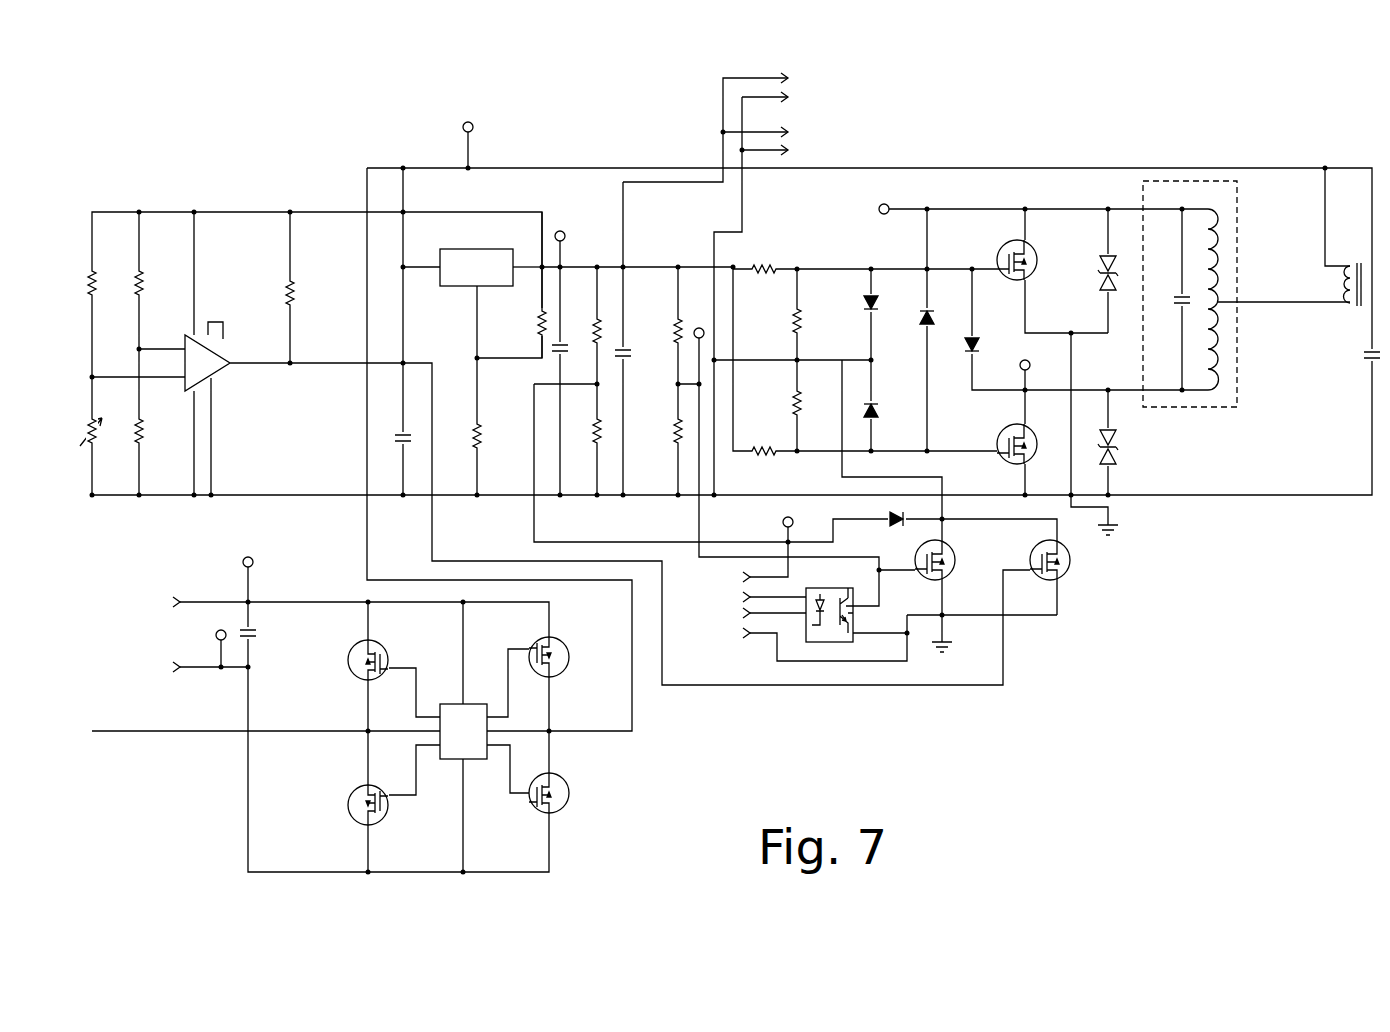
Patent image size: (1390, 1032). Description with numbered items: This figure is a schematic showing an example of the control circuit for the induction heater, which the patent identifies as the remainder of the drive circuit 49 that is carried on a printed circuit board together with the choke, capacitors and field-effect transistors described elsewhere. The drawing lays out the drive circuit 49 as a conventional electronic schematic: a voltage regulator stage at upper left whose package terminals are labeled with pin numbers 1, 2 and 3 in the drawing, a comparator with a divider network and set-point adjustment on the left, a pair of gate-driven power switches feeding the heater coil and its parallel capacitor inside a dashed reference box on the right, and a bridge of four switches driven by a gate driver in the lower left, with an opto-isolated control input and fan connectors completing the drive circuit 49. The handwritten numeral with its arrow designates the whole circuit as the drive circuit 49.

The drive circuit 49 is at (726, 471).
The regulator adjust pin 1 is at (485, 322).
The regulator output pin 2 is at (527, 261).
The regulator input pin 3 is at (421, 261).